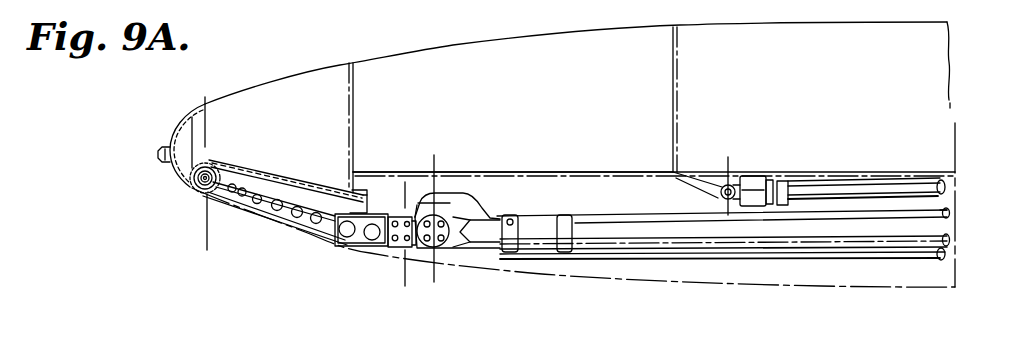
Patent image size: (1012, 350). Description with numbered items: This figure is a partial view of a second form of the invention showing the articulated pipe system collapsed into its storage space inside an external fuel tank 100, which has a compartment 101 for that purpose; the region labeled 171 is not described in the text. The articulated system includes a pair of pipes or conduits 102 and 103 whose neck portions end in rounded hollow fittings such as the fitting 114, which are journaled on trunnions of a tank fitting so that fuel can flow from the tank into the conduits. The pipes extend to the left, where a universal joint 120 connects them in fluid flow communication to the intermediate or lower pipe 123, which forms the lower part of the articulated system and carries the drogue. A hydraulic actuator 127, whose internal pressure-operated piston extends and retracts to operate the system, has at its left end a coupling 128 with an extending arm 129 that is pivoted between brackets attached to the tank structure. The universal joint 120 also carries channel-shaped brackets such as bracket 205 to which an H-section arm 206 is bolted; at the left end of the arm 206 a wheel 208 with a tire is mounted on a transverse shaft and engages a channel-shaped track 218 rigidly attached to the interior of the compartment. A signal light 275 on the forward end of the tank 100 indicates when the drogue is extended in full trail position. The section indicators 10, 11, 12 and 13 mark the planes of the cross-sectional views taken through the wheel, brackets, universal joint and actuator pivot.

The section line 10- 10 is at (196, 102).
The section line 11- 11 is at (397, 192).
The section line 12- 12 is at (420, 162).
The section line 13- 13 is at (728, 163).
The external fuel tank 100 is at (757, 0).
The compartment 101 is at (595, 170).
The pipe 102 is at (490, 227).
The pipe 103 is at (950, 219).
The hollow fitting 114 is at (422, 210).
The universal joint 120 is at (484, 188).
The intermediate pipe 123 is at (841, 250).
The hydraulic actuator 127 is at (893, 186).
The coupling 128 is at (757, 183).
The extending arm 129 is at (718, 190).
The wing box compartment 171 is at (560, 105).
The bracket 205 is at (410, 250).
The arm 206 is at (275, 210).
The wheel 208 is at (190, 187).
The track 218 is at (280, 148).
The signal light 275 is at (160, 154).